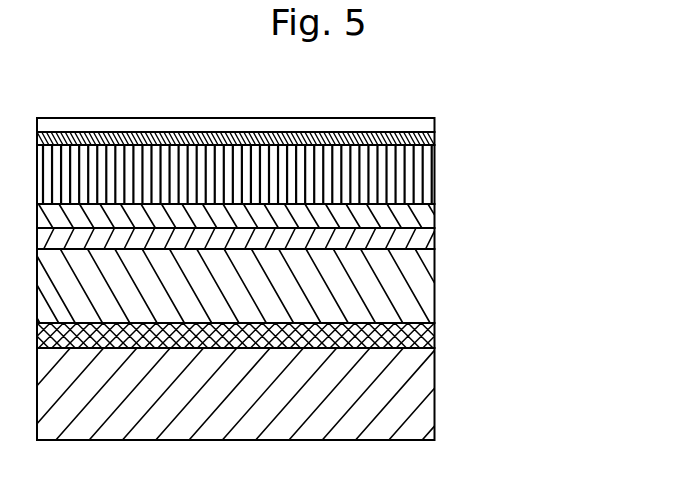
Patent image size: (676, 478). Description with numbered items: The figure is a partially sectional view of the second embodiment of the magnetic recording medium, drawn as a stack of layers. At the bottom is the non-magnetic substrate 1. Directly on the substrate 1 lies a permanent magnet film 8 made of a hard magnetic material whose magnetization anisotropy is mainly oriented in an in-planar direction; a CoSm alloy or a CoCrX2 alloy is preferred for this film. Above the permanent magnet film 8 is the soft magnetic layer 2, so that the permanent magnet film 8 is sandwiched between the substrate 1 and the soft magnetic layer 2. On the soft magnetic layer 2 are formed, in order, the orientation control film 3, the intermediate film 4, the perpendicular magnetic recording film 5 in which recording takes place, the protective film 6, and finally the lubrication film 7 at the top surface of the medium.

The non-magnetic substrate 1 is at (425, 360).
The soft magnetic layer 2 is at (427, 282).
The orientation control film 3 is at (436, 238).
The intermediate film 4 is at (430, 218).
The perpendicular magnetic recording film 5 is at (427, 178).
The protective film 6 is at (436, 142).
The lubrication film 7 is at (436, 127).
The permanent magnet film 8 is at (433, 333).